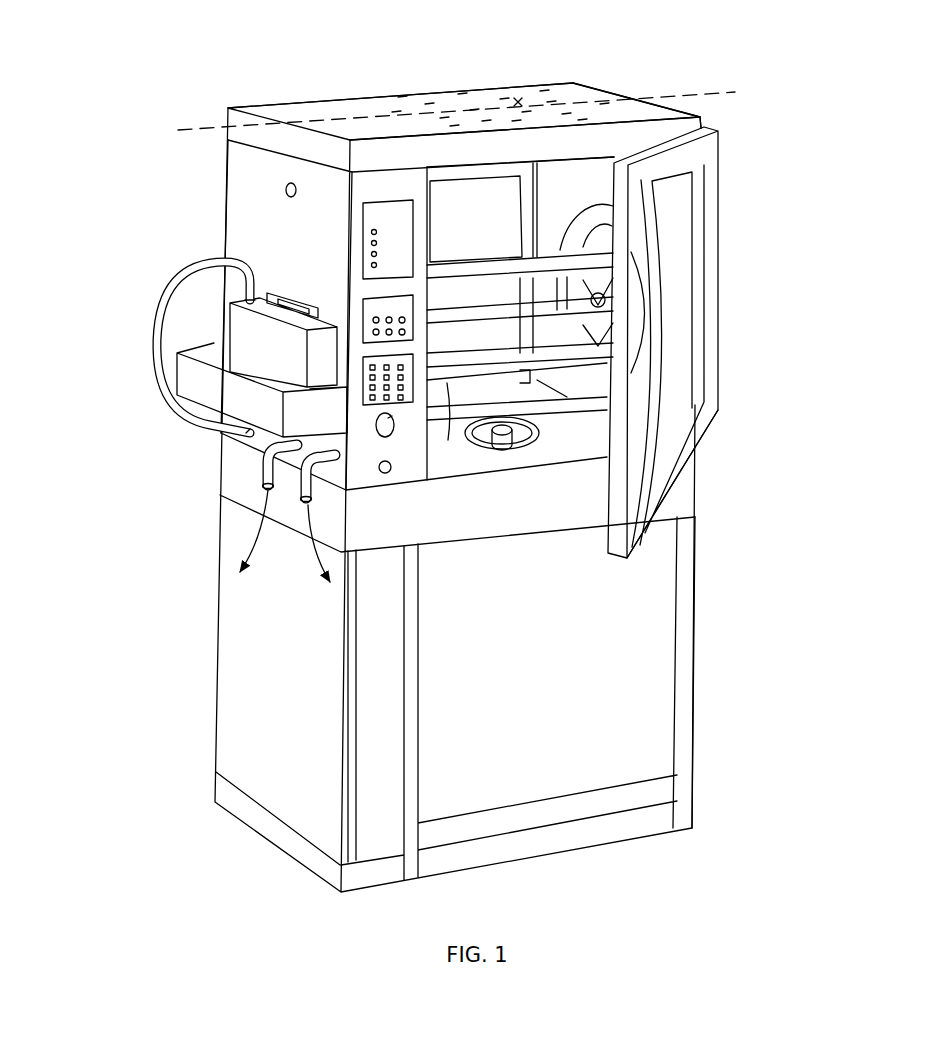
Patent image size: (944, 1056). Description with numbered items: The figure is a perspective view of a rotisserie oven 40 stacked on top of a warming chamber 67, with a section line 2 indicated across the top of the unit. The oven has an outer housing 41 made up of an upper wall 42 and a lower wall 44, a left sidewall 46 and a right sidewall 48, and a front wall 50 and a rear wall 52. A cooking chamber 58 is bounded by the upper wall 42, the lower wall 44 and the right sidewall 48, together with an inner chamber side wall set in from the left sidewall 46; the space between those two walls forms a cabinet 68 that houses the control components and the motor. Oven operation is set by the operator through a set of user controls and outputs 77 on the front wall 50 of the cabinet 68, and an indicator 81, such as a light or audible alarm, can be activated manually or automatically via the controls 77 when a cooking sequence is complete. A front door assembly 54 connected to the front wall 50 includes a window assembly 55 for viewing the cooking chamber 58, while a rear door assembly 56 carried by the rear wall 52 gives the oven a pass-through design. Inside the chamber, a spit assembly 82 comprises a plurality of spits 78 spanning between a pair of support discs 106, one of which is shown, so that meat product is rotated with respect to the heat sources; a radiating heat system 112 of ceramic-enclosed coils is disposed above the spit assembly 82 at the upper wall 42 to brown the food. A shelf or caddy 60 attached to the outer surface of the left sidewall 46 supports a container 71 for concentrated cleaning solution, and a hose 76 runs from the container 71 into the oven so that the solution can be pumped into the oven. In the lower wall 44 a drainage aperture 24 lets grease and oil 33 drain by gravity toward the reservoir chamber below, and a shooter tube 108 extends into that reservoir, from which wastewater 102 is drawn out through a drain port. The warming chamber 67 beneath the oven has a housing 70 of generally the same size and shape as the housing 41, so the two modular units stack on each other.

The section line 2- 2 is at (180, 131).
The drainage aperture 24 is at (493, 480).
The grease and oil 33 is at (258, 550).
The rotisserie oven 40 is at (272, 70).
The outer housing 41 is at (343, 92).
The upper wall 42 is at (470, 100).
The lower wall 44 is at (555, 443).
The left sidewall 46 is at (262, 241).
The right sidewall 48 is at (543, 216).
The front wall 50 is at (633, 132).
The rear wall 52 is at (413, 98).
The front door assembly 54 is at (727, 313).
The window assembly 55 is at (686, 408).
The rear door assembly 56 is at (467, 207).
The cooking chamber 58 is at (549, 160).
The shelf or caddy 60 is at (214, 401).
The warming chamber 67 is at (721, 527).
The cabinet 68 is at (257, 213).
The housing 70 is at (700, 572).
The liquid container 71 is at (246, 351).
The hose 76 is at (156, 362).
The user controls and outputs 77 is at (358, 318).
The spits 78 is at (448, 441).
The indicator 81 is at (296, 195).
The spit assembly 82 is at (507, 255).
The wastewater 102 is at (318, 574).
The support discs 106 is at (585, 205).
The shooter tube 108 is at (521, 442).
The radiating heat system 112 is at (520, 103).